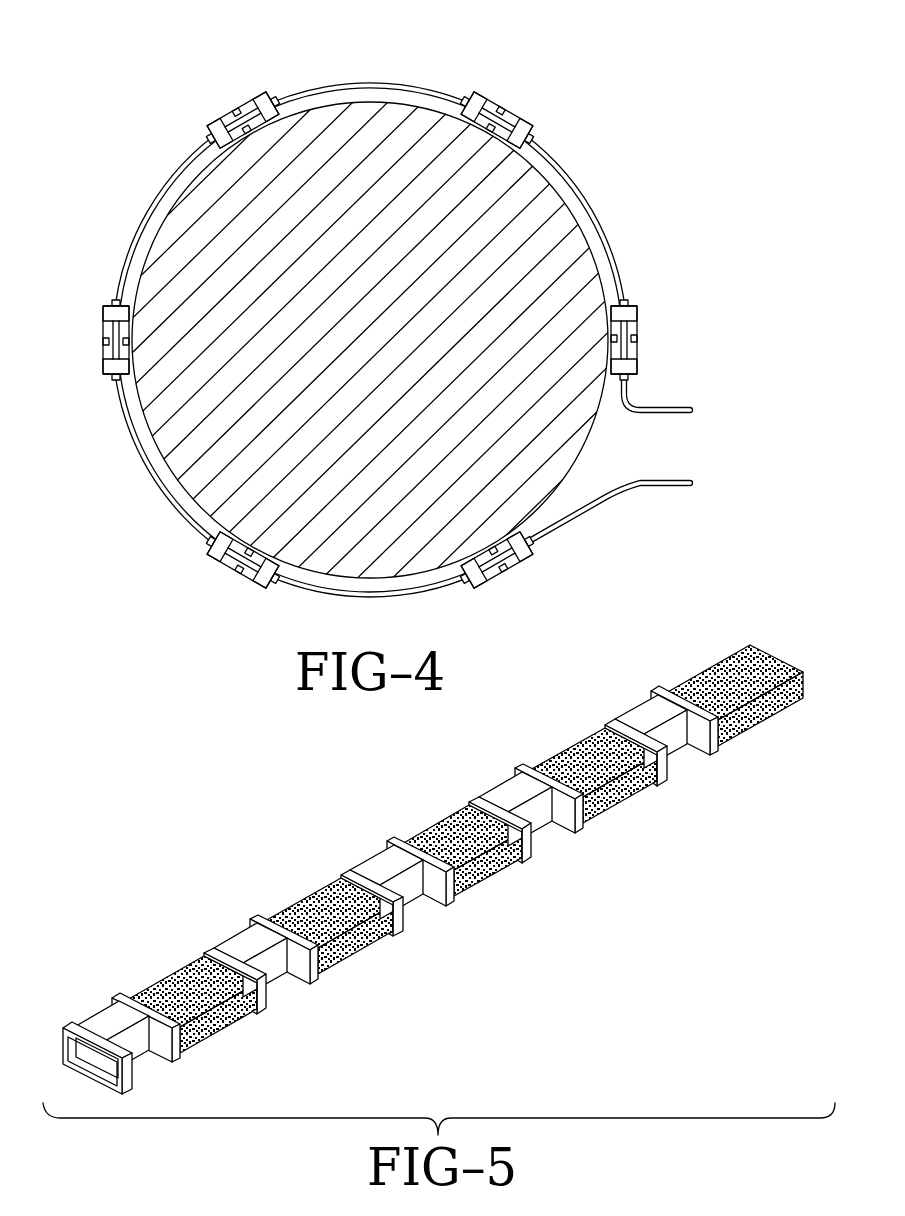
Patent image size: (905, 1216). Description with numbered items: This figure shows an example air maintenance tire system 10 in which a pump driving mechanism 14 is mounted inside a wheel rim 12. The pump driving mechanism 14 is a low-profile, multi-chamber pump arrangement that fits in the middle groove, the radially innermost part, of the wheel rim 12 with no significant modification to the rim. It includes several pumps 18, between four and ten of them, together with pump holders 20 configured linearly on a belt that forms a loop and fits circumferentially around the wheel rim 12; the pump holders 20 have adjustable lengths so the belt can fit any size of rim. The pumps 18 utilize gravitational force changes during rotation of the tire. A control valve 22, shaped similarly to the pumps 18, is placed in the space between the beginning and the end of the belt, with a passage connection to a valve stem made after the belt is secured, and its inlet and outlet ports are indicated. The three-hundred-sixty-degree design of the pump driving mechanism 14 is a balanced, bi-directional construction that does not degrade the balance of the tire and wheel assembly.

In FIG. 4, the air maintenance tire system 10 is at (745, 122).
In FIG. 4, the wheel rim 12 is at (381, 351).
In FIG. 4, the pump driving mechanism 14 is at (674, 236).
In FIG. 5, the pump driving mechanism 14 is at (252, 865).
In FIG. 4, the pump 18 is at (230, 113).
In FIG. 5, the pump 18 is at (469, 845).
In FIG. 4, the pump holder 20 is at (268, 97).
In FIG. 5, the pump holder 20 is at (648, 725).
In FIG. 4, the control valve 22 is at (697, 460).
In FIG. 5, the control valve 22 is at (784, 665).